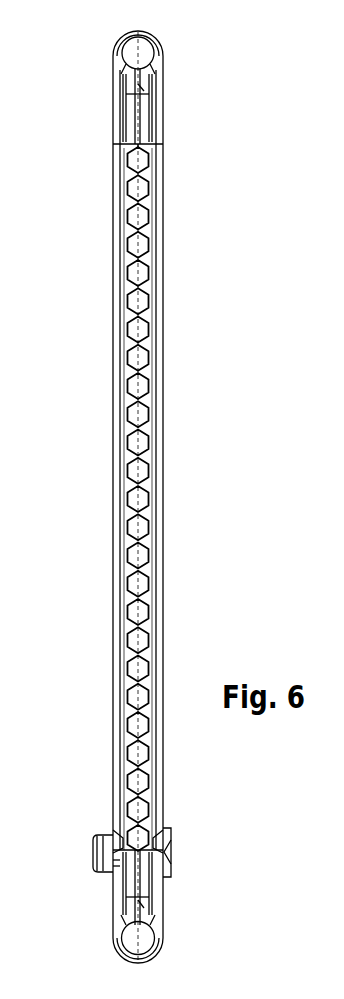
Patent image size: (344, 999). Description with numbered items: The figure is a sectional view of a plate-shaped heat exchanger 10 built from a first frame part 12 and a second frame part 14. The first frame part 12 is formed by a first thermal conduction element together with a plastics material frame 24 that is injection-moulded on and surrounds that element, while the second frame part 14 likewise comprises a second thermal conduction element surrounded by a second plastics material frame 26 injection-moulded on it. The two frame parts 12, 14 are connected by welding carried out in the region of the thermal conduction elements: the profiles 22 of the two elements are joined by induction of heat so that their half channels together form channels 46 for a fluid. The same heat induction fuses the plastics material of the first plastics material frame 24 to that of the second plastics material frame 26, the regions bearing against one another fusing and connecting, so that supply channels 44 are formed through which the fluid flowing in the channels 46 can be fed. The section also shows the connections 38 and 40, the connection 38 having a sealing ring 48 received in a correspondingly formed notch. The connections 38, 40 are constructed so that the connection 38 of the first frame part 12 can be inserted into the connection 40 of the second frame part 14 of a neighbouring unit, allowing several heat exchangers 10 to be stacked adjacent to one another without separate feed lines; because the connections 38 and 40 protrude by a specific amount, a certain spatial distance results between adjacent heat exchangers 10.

The plate-shaped heat exchanger 10 is at (207, 118).
The first frame part 12 is at (102, 413).
The second frame part 14 is at (170, 462).
The profiles 22 is at (127, 200).
The plastics material frame 24 is at (112, 647).
The second plastics material frame 26 is at (162, 635).
The connection 38 is at (100, 836).
The connection 40 is at (172, 845).
The supply channels 44 is at (130, 53).
The channels 46 is at (147, 328).
The sealing ring 48 is at (105, 873).